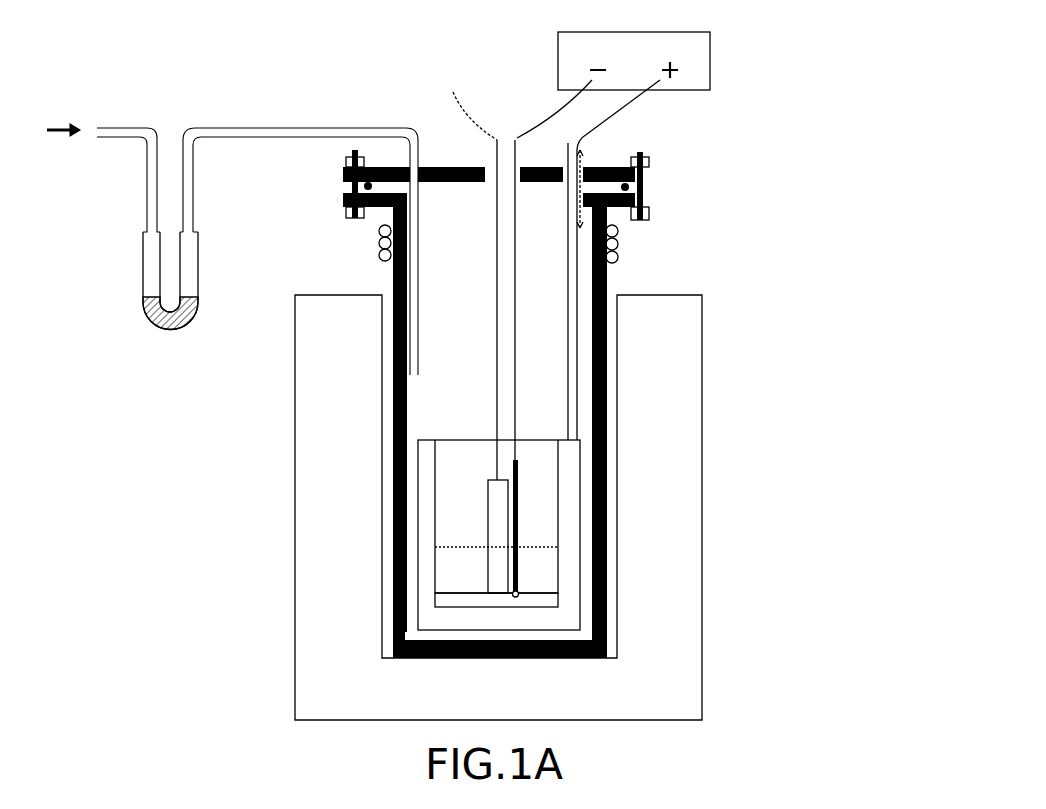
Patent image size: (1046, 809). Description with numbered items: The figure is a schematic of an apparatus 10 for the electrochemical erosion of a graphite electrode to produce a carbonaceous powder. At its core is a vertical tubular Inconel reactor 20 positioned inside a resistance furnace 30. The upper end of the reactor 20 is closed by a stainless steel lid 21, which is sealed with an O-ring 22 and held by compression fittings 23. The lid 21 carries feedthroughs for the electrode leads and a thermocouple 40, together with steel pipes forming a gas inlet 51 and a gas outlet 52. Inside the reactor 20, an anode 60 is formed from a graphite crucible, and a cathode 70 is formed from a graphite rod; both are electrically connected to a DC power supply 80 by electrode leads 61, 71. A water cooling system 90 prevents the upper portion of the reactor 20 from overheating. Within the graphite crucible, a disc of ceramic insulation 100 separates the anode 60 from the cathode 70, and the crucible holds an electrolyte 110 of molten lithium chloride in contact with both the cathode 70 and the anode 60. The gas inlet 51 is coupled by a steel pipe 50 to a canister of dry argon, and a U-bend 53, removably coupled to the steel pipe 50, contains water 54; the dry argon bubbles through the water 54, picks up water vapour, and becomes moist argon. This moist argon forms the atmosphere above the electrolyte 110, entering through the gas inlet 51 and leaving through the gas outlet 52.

The apparatus 10 is at (885, 285).
The vertical tubular Inconel reactor 20 is at (607, 270).
The stainless steel lid 21 is at (584, 160).
The O-ring 22 is at (648, 186).
The compression fittings 23 is at (650, 159).
The resistance furnace 30 is at (682, 572).
The thermocouple 40 is at (518, 462).
The steel pipe 50 is at (226, 128).
The gas inlet 51 is at (410, 290).
The gas outlet 52 is at (607, 226).
The U-bend 53 is at (140, 268).
The water 54 is at (150, 318).
The anode 60 is at (579, 438).
The electrode lead 61 is at (640, 104).
The cathode 70 is at (490, 483).
The electrode lead 71 is at (536, 130).
The DC power supply 80 is at (713, 45).
The water cooling system 90 is at (378, 243).
The ceramic insulation 100 is at (560, 601).
The electrolyte 110 is at (538, 582).